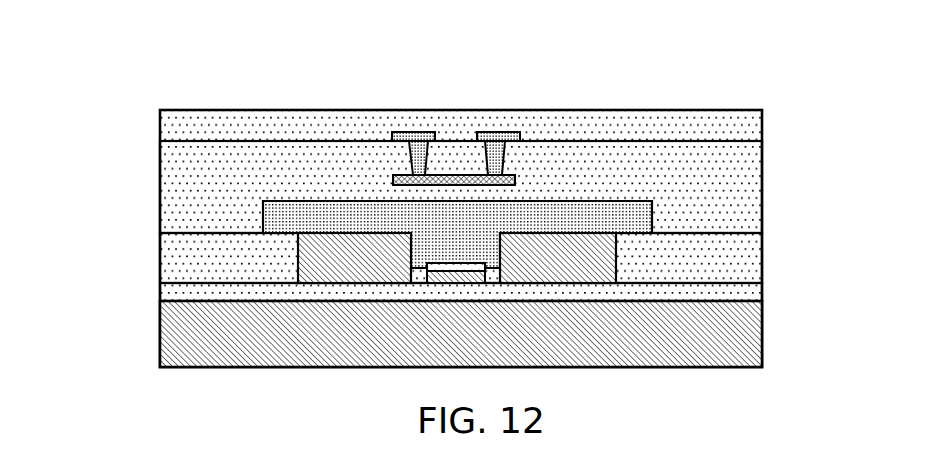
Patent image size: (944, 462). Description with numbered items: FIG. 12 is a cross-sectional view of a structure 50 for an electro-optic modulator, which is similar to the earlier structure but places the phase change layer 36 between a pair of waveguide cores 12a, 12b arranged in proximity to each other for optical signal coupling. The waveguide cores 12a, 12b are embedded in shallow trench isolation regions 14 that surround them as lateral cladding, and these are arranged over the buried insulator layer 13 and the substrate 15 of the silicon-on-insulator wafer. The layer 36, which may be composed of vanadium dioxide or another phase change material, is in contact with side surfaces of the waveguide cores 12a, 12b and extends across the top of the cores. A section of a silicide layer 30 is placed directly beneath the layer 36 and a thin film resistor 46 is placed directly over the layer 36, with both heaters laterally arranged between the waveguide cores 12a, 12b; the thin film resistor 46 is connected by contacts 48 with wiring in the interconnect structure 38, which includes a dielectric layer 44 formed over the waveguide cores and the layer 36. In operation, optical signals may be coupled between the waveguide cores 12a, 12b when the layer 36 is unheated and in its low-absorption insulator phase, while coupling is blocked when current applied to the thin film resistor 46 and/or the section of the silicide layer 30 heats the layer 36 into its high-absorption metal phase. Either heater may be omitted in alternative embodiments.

The structure 50 is at (122, 130).
The interconnect structure 38 is at (768, 161).
The dielectric layer 44 is at (176, 176).
The shallow trench isolation regions 14 is at (732, 255).
The buried insulator layer 13 is at (737, 297).
The substrate 15 is at (170, 340).
The layer 36 is at (587, 213).
The waveguide core 12a is at (332, 245).
The waveguide core 12b is at (590, 258).
The silicide layer 30 is at (453, 268).
The thin film resistor 46 is at (458, 178).
The contacts 48 is at (492, 170).